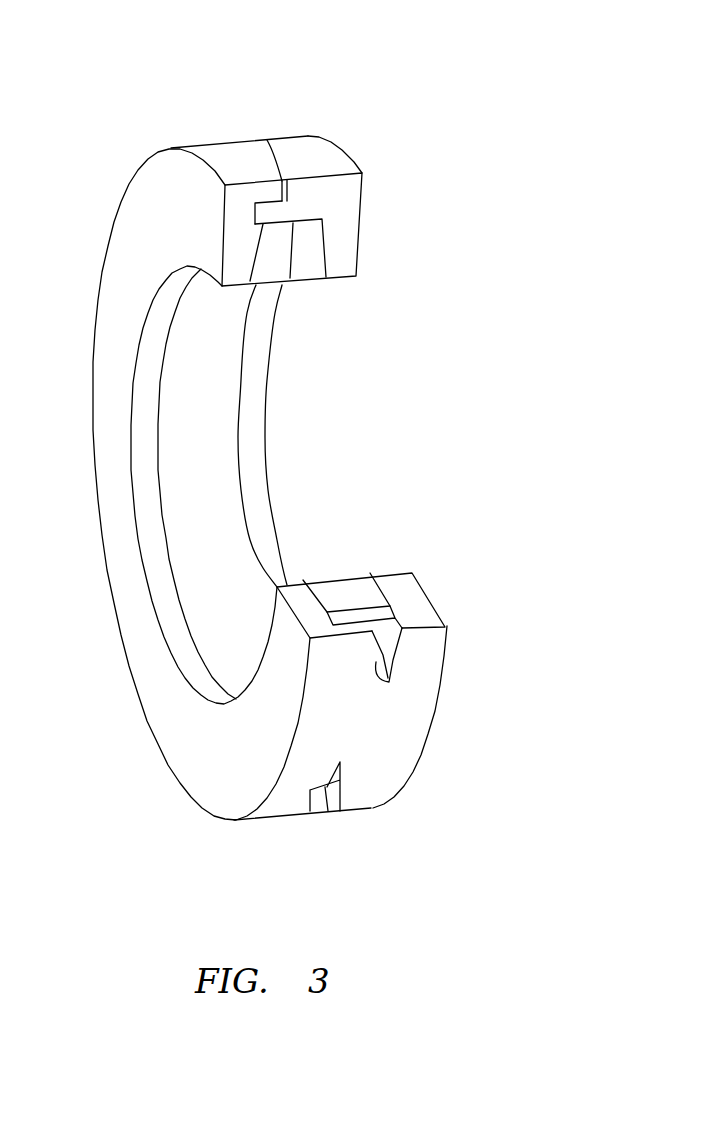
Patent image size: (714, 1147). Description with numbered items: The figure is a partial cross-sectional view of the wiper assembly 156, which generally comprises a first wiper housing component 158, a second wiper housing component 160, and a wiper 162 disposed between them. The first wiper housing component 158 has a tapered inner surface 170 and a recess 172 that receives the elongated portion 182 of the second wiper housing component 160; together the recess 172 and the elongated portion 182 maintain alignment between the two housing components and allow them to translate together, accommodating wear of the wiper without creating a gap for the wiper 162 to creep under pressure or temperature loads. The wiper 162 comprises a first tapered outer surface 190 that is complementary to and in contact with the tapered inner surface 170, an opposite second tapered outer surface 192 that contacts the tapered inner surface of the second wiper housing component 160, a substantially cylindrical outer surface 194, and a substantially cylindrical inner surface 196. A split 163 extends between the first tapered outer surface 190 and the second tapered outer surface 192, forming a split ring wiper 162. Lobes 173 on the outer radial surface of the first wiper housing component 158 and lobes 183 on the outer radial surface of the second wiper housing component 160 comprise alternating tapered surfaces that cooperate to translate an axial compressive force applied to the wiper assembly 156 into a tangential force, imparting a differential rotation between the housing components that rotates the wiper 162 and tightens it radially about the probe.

The wiper assembly 156 is at (506, 38).
The first wiper housing component 158 is at (200, 144).
The second wiper housing component 160 is at (296, 139).
The wiper 162 is at (211, 463).
The split 163 is at (293, 254).
The tapered inner surface 170 is at (262, 283).
The recess 172 is at (289, 203).
The lobes 173 is at (340, 780).
The elongated portion 182 is at (256, 214).
The lobes 183 is at (386, 672).
The first tapered outer surface 190 is at (262, 250).
The second tapered outer surface 192 is at (323, 255).
The substantially cylindrical outer surface 194 is at (300, 220).
The substantially cylindrical inner surface 196 is at (303, 282).